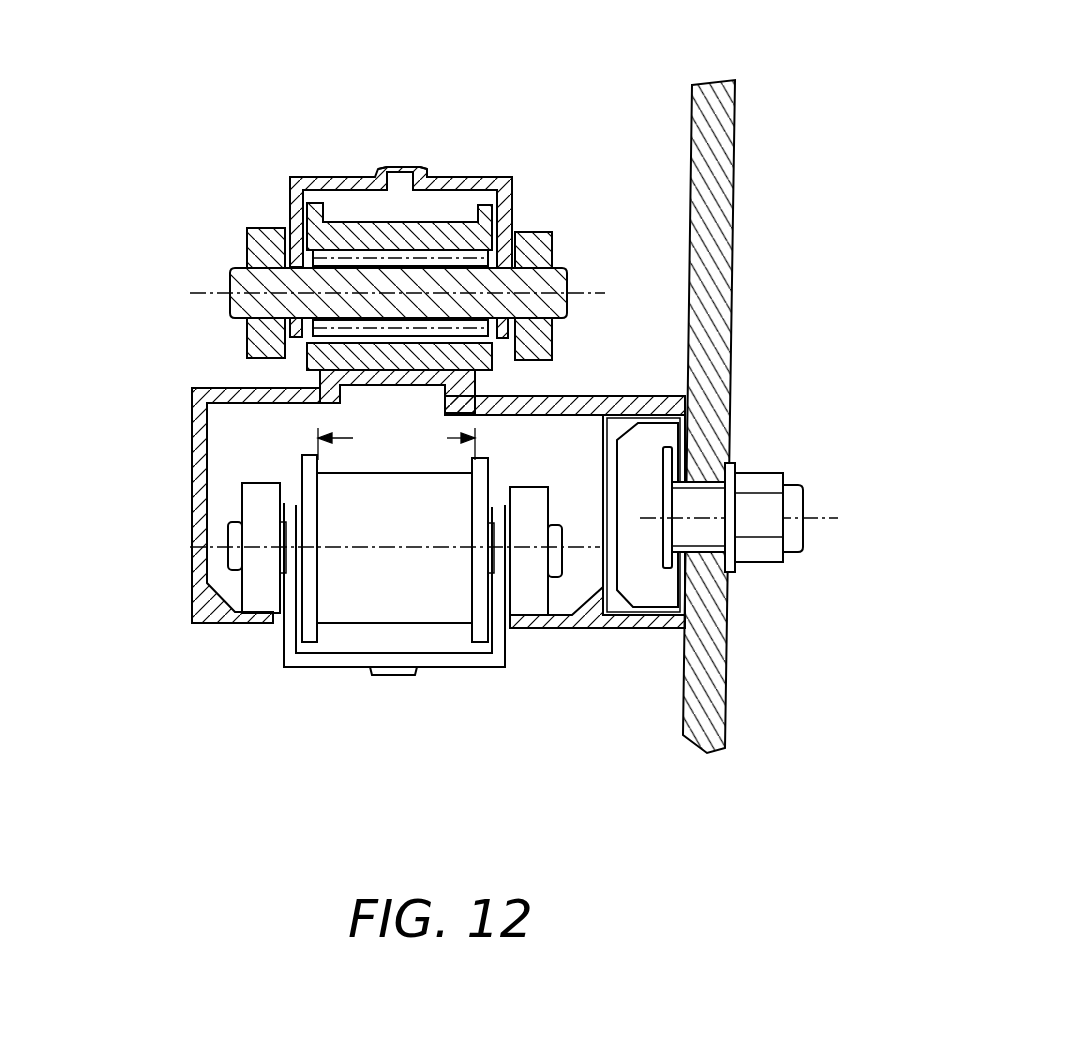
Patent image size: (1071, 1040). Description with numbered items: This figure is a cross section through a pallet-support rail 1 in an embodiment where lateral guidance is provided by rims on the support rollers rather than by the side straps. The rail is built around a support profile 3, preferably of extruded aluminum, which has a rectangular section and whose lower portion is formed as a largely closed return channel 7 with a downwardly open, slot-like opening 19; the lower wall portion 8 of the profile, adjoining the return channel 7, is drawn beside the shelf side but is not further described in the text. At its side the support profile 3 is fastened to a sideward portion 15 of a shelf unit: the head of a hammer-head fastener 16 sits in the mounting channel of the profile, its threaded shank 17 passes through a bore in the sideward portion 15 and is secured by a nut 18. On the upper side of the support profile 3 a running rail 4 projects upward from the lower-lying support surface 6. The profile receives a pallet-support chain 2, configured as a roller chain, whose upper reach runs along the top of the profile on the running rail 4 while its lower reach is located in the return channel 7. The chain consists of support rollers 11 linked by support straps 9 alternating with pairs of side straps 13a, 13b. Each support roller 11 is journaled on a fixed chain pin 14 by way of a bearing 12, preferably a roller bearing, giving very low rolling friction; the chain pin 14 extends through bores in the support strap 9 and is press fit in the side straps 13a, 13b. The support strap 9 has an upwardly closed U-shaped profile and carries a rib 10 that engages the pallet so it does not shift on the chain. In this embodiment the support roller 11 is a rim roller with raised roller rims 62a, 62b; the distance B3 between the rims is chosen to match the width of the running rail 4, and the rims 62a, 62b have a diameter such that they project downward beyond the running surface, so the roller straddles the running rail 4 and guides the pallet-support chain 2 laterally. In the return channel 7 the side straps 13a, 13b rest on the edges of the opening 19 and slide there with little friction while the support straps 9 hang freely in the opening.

The pallet-support rail 1 is at (150, 529).
The pallet-support chain 2 is at (224, 191).
The support profile 3 is at (468, 500).
The running rail 4 is at (264, 424).
The support surface 6 is at (640, 390).
The return channel 7 is at (225, 582).
The bracket lower flange 8 is at (665, 628).
The support strap 9 is at (330, 183).
The rib 10 is at (385, 168).
The support roller 11 is at (392, 230).
The bearing 12 is at (430, 262).
The side strap 13a is at (245, 345).
The side strap 13b is at (540, 250).
The chain pin 14 is at (237, 275).
The sideward portion 15 is at (717, 132).
The hammer-head fastener 16 is at (642, 472).
The threaded shank 17 is at (793, 502).
The nut 18 is at (758, 553).
The opening 19 is at (280, 623).
The roller rim 62a is at (308, 633).
The roller rim 62b is at (480, 633).
The distance separating the roller rims B3 is at (396, 438).